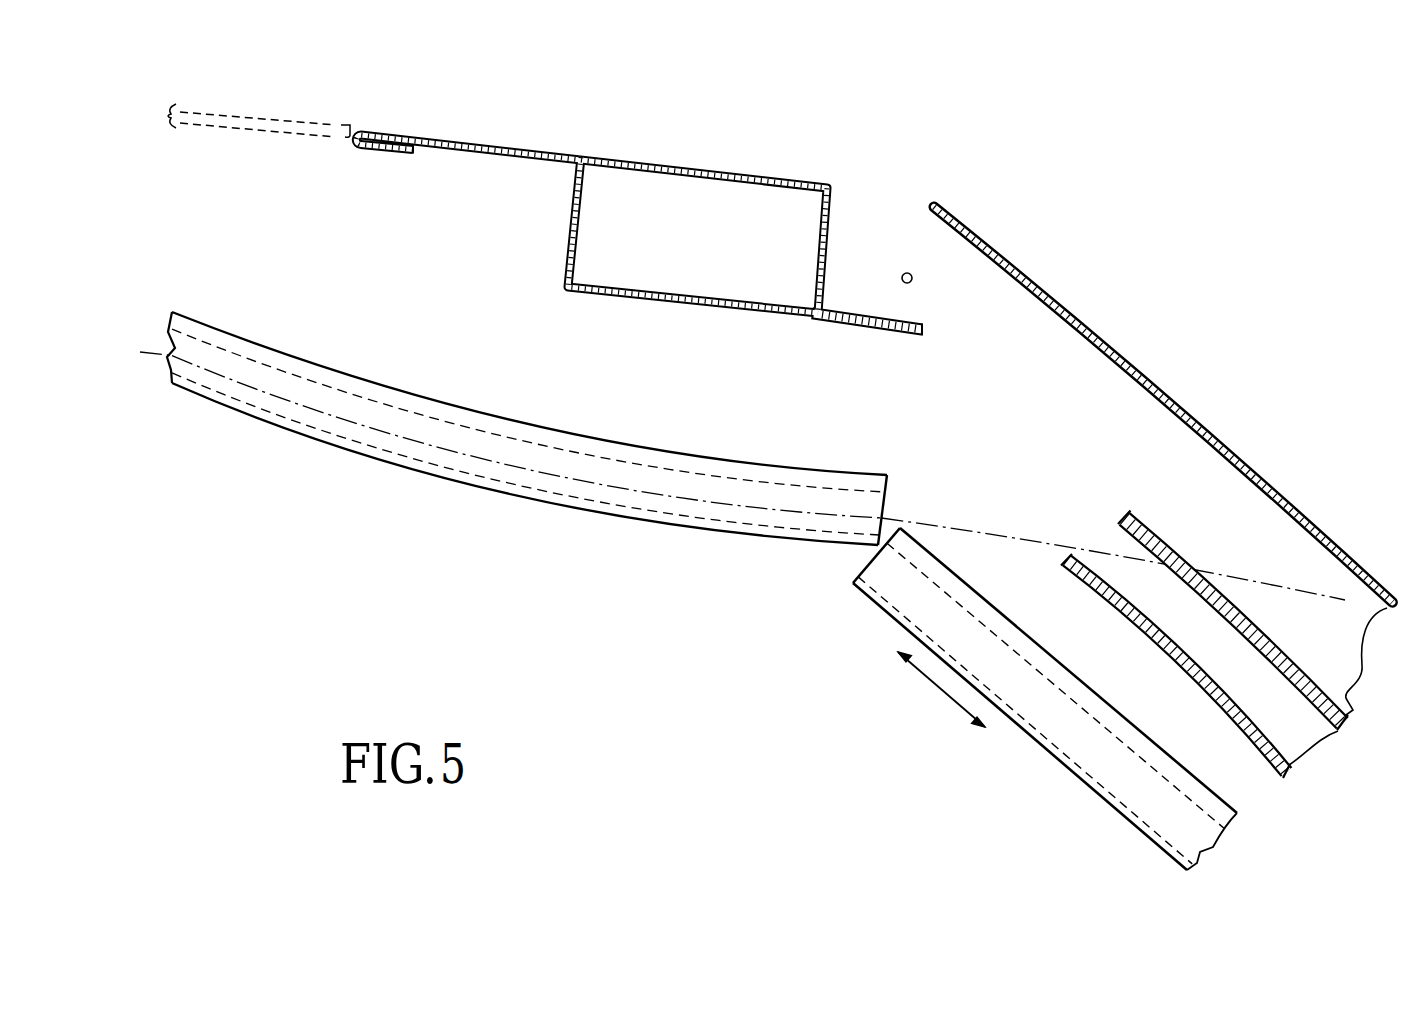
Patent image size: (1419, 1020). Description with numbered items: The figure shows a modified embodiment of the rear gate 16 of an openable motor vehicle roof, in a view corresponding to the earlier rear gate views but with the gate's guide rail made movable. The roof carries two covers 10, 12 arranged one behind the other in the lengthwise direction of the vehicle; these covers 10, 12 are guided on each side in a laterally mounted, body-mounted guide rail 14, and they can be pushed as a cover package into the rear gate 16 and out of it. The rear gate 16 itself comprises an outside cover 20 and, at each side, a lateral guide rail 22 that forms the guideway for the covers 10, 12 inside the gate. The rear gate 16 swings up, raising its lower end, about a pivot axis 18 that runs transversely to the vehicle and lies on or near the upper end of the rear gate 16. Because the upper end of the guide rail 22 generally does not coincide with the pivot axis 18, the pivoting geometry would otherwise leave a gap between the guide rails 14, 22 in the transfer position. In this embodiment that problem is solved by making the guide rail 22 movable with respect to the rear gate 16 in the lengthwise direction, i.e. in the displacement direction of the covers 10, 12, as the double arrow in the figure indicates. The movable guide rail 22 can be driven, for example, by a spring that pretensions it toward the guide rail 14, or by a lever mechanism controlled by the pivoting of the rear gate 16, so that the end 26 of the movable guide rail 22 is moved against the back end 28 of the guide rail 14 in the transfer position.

The cover 10 is at (1123, 622).
The cover 12 is at (1137, 517).
The guide rail 14 is at (530, 484).
The rear gate 16 is at (1185, 375).
The pivot axis 18 is at (905, 272).
The outside cover 20 is at (1043, 287).
The guide rail 22 is at (903, 593).
The upper end 26 is at (857, 582).
The back end 28 is at (887, 483).